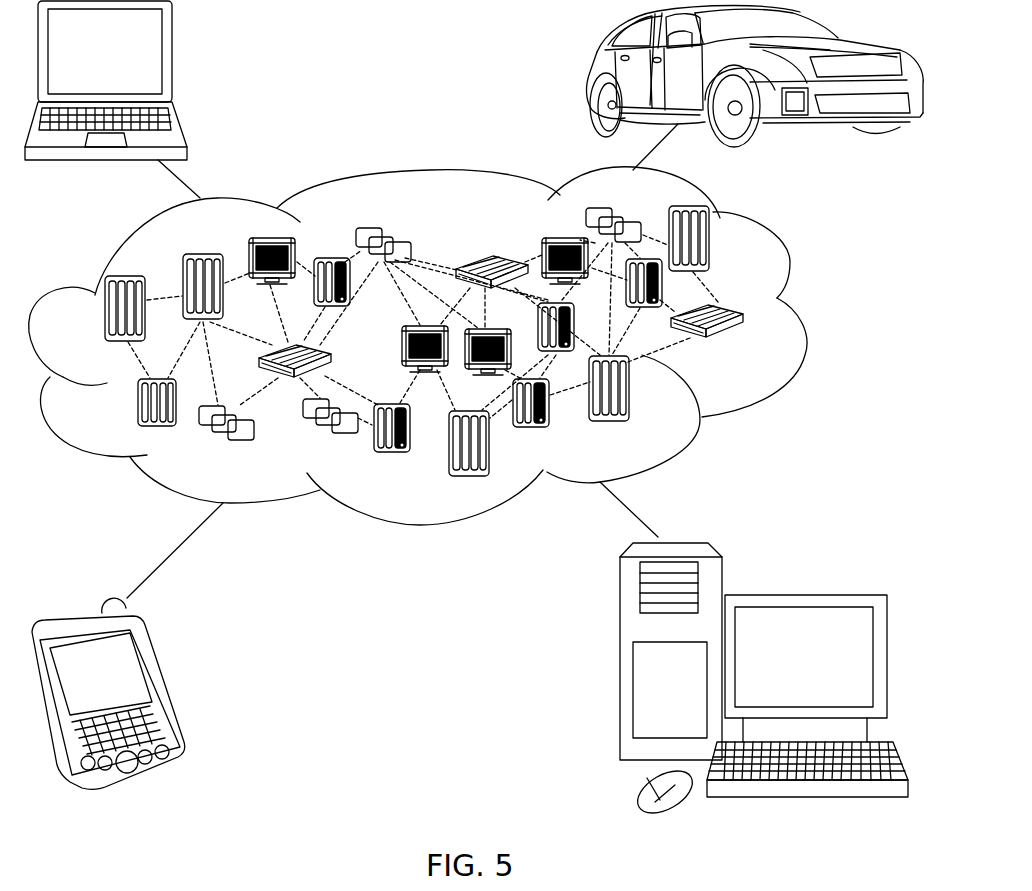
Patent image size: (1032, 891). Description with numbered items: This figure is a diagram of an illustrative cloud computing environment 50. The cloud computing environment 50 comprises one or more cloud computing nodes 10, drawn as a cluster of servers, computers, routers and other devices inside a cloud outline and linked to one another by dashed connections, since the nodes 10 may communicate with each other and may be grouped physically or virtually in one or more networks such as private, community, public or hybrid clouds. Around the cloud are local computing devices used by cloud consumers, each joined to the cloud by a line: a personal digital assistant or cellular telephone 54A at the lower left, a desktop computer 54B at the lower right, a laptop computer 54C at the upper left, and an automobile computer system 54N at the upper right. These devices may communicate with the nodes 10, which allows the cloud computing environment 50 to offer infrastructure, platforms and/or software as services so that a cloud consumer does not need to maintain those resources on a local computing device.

The cloud computing nodes 10 is at (755, 350).
The cloud computing environment 50 is at (807, 318).
The personal digital assistant (PDA) or cellular telephone 54A is at (157, 687).
The desktop computer 54B is at (802, 595).
The laptop computer 54C is at (173, 62).
The automobile computer system 54N is at (595, 68).